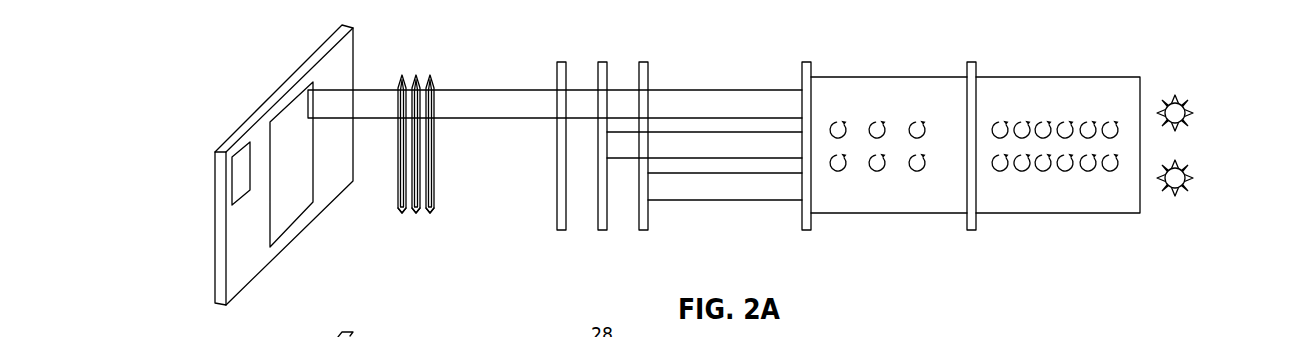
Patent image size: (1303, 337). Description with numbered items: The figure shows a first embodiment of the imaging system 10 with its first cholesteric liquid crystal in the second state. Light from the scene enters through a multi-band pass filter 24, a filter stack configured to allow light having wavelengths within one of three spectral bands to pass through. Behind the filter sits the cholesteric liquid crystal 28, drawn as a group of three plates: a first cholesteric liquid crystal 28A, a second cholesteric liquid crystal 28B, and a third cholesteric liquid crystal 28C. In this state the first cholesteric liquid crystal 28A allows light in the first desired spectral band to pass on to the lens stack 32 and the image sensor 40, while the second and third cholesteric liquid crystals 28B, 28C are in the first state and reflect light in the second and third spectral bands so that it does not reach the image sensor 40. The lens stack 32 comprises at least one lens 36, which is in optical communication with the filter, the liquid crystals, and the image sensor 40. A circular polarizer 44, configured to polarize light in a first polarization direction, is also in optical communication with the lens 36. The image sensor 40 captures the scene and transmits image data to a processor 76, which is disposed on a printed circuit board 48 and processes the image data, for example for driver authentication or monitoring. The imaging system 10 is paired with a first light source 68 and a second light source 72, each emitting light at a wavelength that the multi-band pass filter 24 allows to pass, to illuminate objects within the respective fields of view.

The imaging system 10 is at (165, 188).
The multi-band pass filter 24 is at (812, 222).
The cholesteric liquid crystal 28 is at (662, 52).
The first cholesteric liquid crystal 28A is at (556, 205).
The second cholesteric liquid crystal 28B is at (597, 205).
The third cholesteric liquid crystal 28C is at (650, 212).
The lens stack 32 is at (387, 71).
The lens 36 is at (430, 215).
The image sensor 40 is at (281, 128).
The circular polarizer 44 is at (977, 222).
The printed circuit board 48 is at (248, 248).
The first light source 68 is at (1193, 106).
The second light source 72 is at (1193, 171).
The processor 76 is at (240, 160).